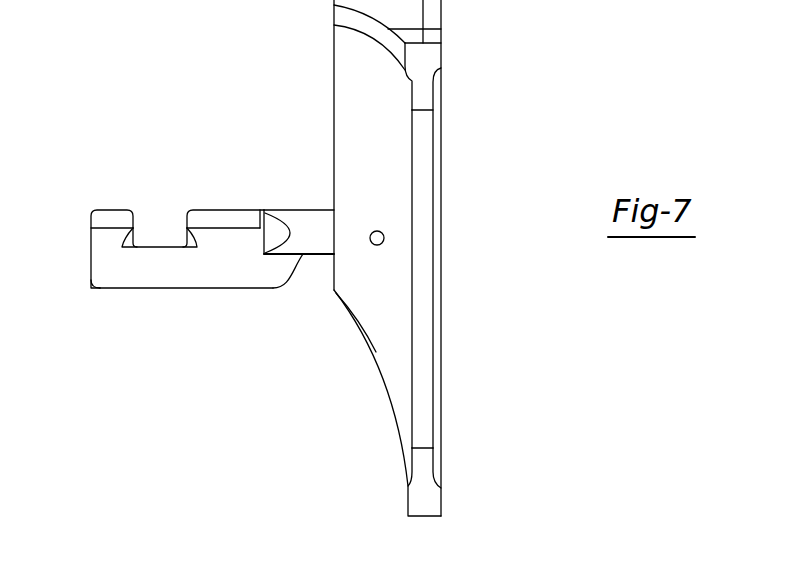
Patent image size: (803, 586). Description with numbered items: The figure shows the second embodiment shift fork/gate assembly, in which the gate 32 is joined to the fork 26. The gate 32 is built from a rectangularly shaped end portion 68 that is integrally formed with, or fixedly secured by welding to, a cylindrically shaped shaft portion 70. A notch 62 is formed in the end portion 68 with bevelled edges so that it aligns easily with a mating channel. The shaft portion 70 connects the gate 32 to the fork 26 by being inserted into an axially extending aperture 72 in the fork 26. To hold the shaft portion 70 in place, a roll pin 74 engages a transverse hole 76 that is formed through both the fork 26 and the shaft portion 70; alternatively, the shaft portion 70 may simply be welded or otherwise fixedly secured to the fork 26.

The fork 26 is at (425, 67).
The gate 32 is at (112, 257).
The notch 62 is at (163, 218).
The end portion 68 is at (175, 265).
The shaft portion 70 is at (310, 220).
The aperture 72 is at (332, 263).
The roll pin 74 is at (385, 242).
The transverse hole 76 is at (390, 230).